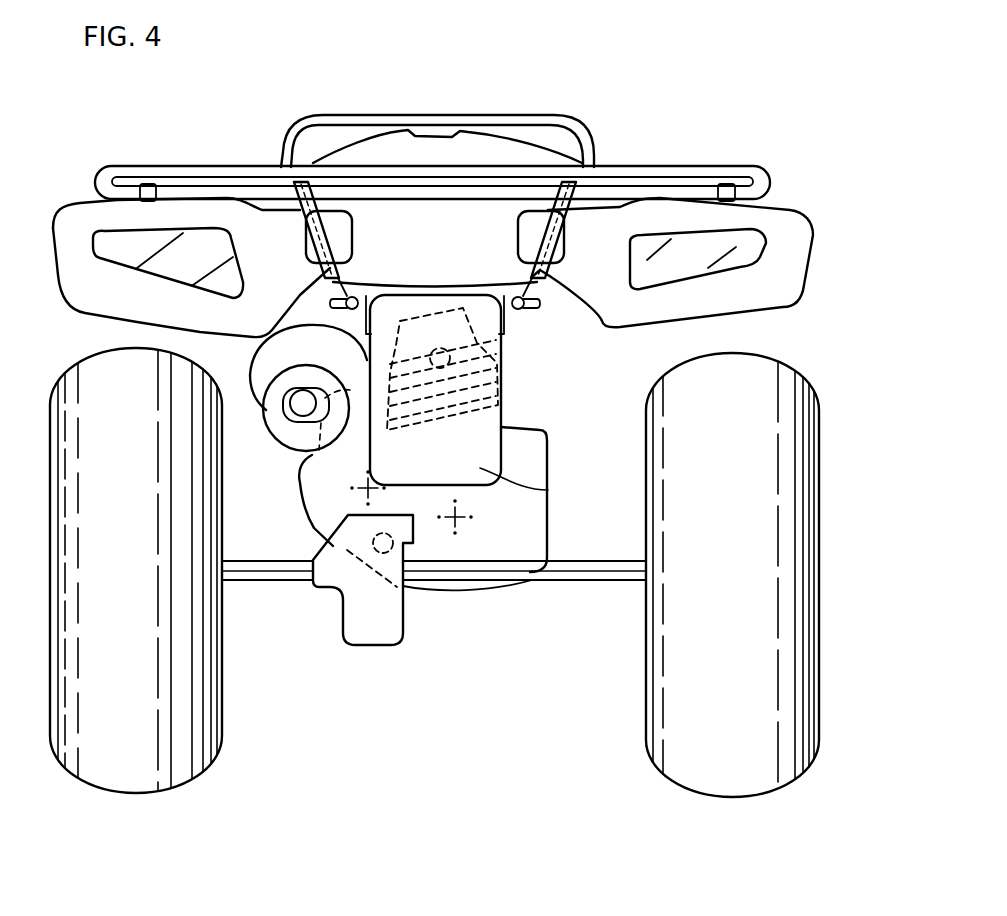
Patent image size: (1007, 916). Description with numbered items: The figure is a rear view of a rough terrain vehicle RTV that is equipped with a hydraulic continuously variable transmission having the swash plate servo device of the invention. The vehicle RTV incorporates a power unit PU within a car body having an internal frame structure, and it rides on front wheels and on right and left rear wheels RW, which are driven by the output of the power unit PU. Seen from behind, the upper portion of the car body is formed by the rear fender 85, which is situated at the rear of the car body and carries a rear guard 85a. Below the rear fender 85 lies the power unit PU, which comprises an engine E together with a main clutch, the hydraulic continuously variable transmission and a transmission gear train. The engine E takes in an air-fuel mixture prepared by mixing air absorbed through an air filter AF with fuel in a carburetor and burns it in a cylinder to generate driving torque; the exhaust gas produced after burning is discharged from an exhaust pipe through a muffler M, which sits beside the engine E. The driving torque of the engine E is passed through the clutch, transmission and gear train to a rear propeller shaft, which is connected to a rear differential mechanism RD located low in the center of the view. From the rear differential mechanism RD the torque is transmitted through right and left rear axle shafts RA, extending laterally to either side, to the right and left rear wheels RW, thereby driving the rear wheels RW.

The rear fender 85 is at (517, 195).
The rear guard 85a is at (697, 172).
The rough terrain vehicle RTV is at (808, 178).
The rear wheels RW is at (758, 380).
The engine E is at (502, 367).
The power unit PU is at (536, 432).
The air filter AF is at (548, 490).
The muffler M is at (284, 430).
The rear axle shafts RA is at (263, 582).
The rear differential mechanism RD is at (387, 633).